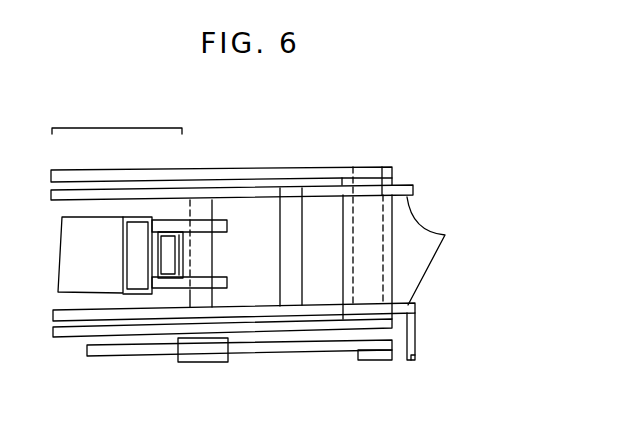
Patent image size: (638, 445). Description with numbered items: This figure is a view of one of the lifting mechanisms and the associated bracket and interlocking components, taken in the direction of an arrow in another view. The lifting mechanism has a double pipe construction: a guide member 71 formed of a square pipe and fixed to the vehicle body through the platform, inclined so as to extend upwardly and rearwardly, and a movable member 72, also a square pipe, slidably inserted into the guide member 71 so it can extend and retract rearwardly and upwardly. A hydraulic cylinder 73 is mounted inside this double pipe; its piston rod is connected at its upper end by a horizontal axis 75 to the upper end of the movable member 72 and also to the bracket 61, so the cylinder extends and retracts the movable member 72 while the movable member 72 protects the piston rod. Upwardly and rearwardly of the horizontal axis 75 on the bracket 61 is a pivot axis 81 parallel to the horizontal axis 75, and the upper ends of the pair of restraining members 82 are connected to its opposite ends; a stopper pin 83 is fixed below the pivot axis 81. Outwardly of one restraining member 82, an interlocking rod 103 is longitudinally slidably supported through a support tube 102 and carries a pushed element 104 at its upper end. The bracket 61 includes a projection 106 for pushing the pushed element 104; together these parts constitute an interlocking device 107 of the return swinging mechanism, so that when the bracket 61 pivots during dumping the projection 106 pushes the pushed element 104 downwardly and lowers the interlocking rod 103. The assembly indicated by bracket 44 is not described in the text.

The hold-down assembly 44 is at (115, 128).
The guide member 71 is at (75, 217).
The movable member 72 is at (133, 225).
The hydraulic cylinder 73 is at (168, 237).
The horizontal axis 75 is at (190, 203).
The restraining members 82 is at (270, 172).
The pivot axis 81 is at (365, 208).
The stopper pin 83 is at (292, 252).
The bracket 61 is at (441, 251).
The interlocking device 107 is at (422, 347).
The projection 106 is at (417, 357).
The interlocking rod 103 is at (107, 353).
The support tube 102 is at (203, 355).
The pushed element 104 is at (368, 358).